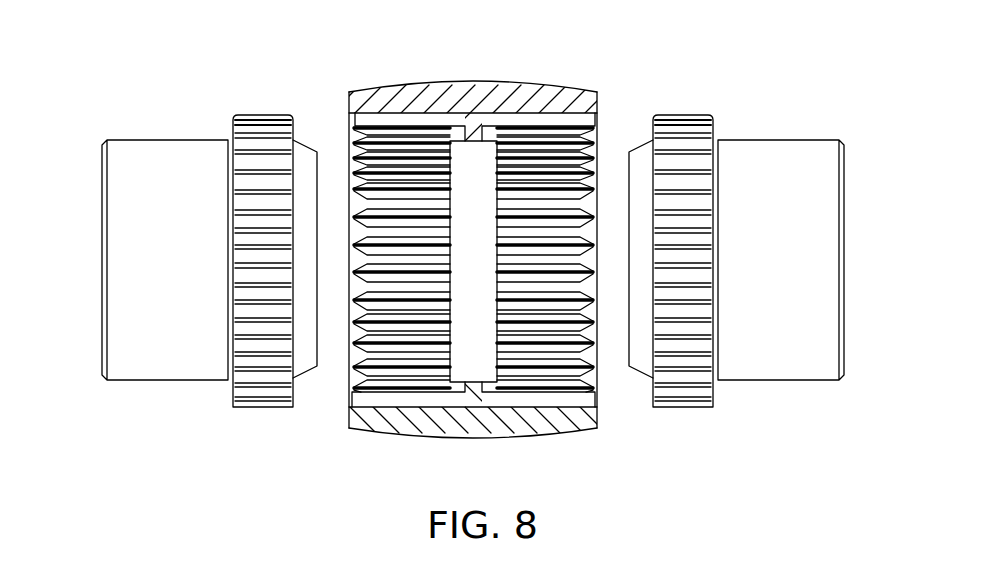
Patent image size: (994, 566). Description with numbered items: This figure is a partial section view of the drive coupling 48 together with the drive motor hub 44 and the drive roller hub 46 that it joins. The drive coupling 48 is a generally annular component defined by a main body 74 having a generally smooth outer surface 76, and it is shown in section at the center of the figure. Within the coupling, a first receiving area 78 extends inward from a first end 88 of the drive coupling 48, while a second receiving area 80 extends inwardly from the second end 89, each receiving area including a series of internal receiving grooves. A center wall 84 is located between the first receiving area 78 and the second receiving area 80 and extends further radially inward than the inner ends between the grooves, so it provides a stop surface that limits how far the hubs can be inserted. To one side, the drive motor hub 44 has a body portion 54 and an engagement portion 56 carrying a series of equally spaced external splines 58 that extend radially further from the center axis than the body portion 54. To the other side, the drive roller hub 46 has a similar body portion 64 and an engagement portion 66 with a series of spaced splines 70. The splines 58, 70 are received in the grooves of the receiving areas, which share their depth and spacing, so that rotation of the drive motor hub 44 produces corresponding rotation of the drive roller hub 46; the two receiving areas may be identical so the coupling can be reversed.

The drive motor hub 44 is at (752, 130).
The drive roller hub 46 is at (164, 128).
The drive coupling 48 is at (498, 84).
The body portion 54 is at (821, 207).
The engagement portion 56 is at (684, 113).
The splines 58 is at (693, 320).
The body portion 64 is at (134, 222).
The first splined ring 66 is at (265, 113).
The splines 70 is at (250, 312).
The main body 74 is at (407, 97).
The outer surface 76 is at (429, 84).
The first receiving area 78 is at (598, 133).
The second receiving area 80 is at (349, 138).
The center wall 84 is at (470, 358).
The first end 88 is at (598, 430).
The second end 89 is at (349, 430).